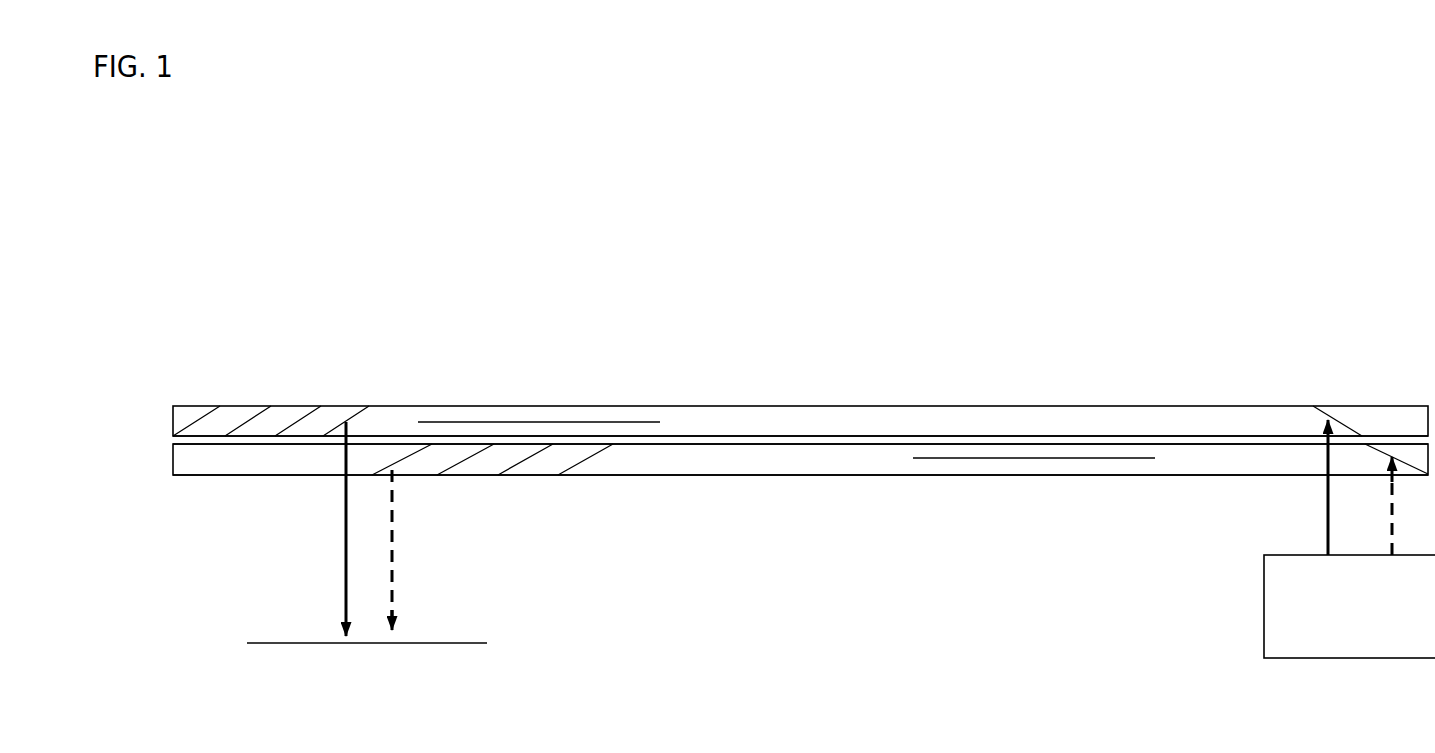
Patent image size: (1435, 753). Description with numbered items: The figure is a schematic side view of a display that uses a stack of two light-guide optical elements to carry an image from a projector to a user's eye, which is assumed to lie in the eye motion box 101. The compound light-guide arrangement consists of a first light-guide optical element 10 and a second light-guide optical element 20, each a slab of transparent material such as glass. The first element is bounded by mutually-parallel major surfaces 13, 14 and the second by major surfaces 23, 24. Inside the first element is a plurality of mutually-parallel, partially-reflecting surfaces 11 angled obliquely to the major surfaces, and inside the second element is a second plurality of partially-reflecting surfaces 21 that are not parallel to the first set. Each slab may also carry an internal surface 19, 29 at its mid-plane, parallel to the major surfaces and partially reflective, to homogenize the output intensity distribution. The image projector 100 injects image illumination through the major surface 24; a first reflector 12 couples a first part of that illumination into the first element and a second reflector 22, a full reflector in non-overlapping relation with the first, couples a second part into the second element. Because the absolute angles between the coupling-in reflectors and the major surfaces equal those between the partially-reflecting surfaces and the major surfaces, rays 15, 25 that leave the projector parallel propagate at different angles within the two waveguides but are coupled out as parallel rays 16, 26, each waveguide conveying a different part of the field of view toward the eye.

The first light-guide optical element 10 is at (800, 438).
The first plurality of partially-reflecting surfaces 11 is at (247, 418).
The first reflector 12 is at (1345, 420).
The major surface of first LOE 13 is at (688, 405).
The major surface of first LOE 14 is at (768, 436).
The first ray of image illumination 15 is at (1310, 487).
The first coupled-out ray 16 is at (329, 529).
The internal surface of first LOE 19 is at (517, 418).
The second light-guide optical element 20 is at (815, 460).
The second plurality of partially-reflecting surfaces 21 is at (532, 465).
The second reflector 22 is at (1403, 457).
The major surface of second LOE 23 is at (718, 447).
The major surface of second LOE 24 is at (760, 475).
The second ray of image illumination 25 is at (1408, 506).
The second coupled-out ray 26 is at (410, 550).
The internal surface of second LOE 29 is at (1017, 452).
The image projector 100 is at (1349, 606).
The eye motion box 101 is at (367, 656).